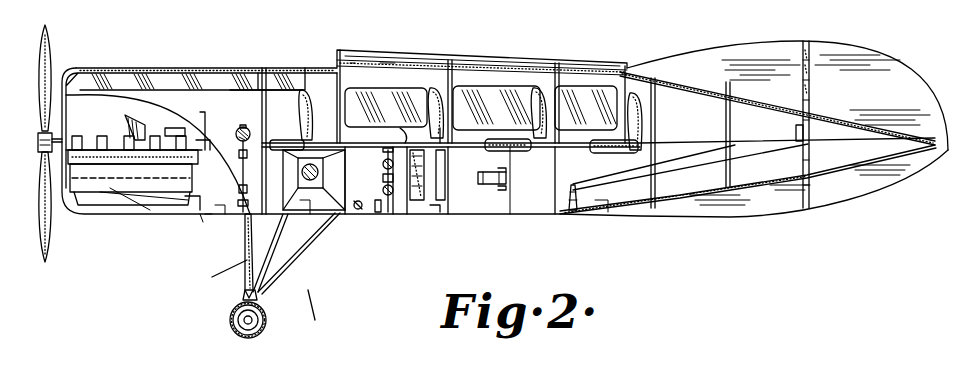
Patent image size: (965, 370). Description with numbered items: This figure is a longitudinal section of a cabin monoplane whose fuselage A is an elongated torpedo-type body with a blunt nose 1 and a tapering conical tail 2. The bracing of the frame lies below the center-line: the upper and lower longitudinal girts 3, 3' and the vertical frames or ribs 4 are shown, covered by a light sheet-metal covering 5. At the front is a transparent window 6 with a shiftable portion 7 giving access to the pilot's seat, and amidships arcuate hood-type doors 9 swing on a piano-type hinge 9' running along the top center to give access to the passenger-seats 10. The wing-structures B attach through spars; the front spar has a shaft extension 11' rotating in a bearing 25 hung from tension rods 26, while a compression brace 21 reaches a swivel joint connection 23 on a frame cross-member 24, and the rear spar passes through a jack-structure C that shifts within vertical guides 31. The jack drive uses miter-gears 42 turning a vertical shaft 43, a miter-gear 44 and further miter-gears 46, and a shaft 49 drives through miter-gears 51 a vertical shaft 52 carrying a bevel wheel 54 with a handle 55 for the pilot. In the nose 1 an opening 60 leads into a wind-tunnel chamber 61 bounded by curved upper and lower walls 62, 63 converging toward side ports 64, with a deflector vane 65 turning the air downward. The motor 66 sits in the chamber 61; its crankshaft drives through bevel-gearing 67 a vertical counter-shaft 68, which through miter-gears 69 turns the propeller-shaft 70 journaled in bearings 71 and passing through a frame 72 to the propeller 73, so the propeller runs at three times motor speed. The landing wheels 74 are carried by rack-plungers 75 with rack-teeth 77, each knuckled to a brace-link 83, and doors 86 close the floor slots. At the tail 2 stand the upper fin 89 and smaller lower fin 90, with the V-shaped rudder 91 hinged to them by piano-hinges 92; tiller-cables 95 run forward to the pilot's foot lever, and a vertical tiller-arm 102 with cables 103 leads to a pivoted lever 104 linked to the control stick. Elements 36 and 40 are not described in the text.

The nose 1 is at (62, 90).
The tail 2 is at (712, 92).
The upper longitudinal girts 3 is at (598, 132).
The lower longitudinal girts 3' is at (196, 235).
The vertical frames or ribs 4 is at (453, 83).
The covering 5 is at (510, 213).
The window 6 is at (169, 81).
The shiftable window portion 7 is at (275, 80).
The hood-type doors 9 is at (482, 44).
The piano-type hinge 9' is at (393, 43).
The passenger-seats 10 is at (427, 117).
The shaft extension 11' is at (311, 183).
The compression member or brace 21 is at (482, 173).
The swivel joint connection 23 is at (498, 168).
The frame cross-member 24 is at (506, 188).
The bearing 25 is at (297, 165).
The tension rods 26 is at (268, 256).
The vertical guides 31 is at (397, 212).
The partition post 36 is at (450, 140).
The seat support 40 is at (400, 128).
The miter-gears 42 is at (383, 152).
The vertical shaft 43 is at (383, 180).
The miter-gear 44 is at (378, 212).
The miter-gears 46 is at (358, 210).
The shaft 49 is at (308, 211).
The miter-gears 51 is at (218, 216).
The vertical shaft 52 is at (243, 165).
The bevel-gear or wheel 54 is at (236, 133).
The handle 55 is at (245, 126).
The opening 60 is at (60, 110).
The wind-tunnel or chamber 61 is at (133, 136).
The upper wall 62 is at (100, 96).
The lower wall 63 is at (133, 208).
The ports or openings 64 is at (210, 230).
The deflector or vane 65 is at (135, 125).
The motor 66 is at (131, 178).
The bevel-gearing 67 is at (192, 216).
The vertical counter-shaft 68 is at (132, 191).
The miter-gears 69 is at (192, 138).
The propeller-shaft 70 is at (173, 127).
The bearings 71 is at (147, 114).
The frame 72 is at (40, 136).
The propeller 73 is at (43, 190).
The landing wheels 74 is at (233, 322).
The rack-plungers 75 is at (299, 256).
The rack-teeth 77 is at (258, 293).
The brace-rod or link 83 is at (307, 297).
The doors 86 is at (216, 278).
The upper fin 89 is at (703, 47).
The lower fin 90 is at (735, 212).
The rudder 91 is at (887, 60).
The piano-hinges 92 is at (812, 82).
The tiller-cables 95 is at (628, 211).
The vertical tiller-arm 102 is at (803, 133).
The cables 103 is at (690, 167).
The pivoted lever 104 is at (577, 187).
The fuselage A is at (600, 212).
The wing-structures B is at (300, 125).
The jack-structure C is at (427, 220).